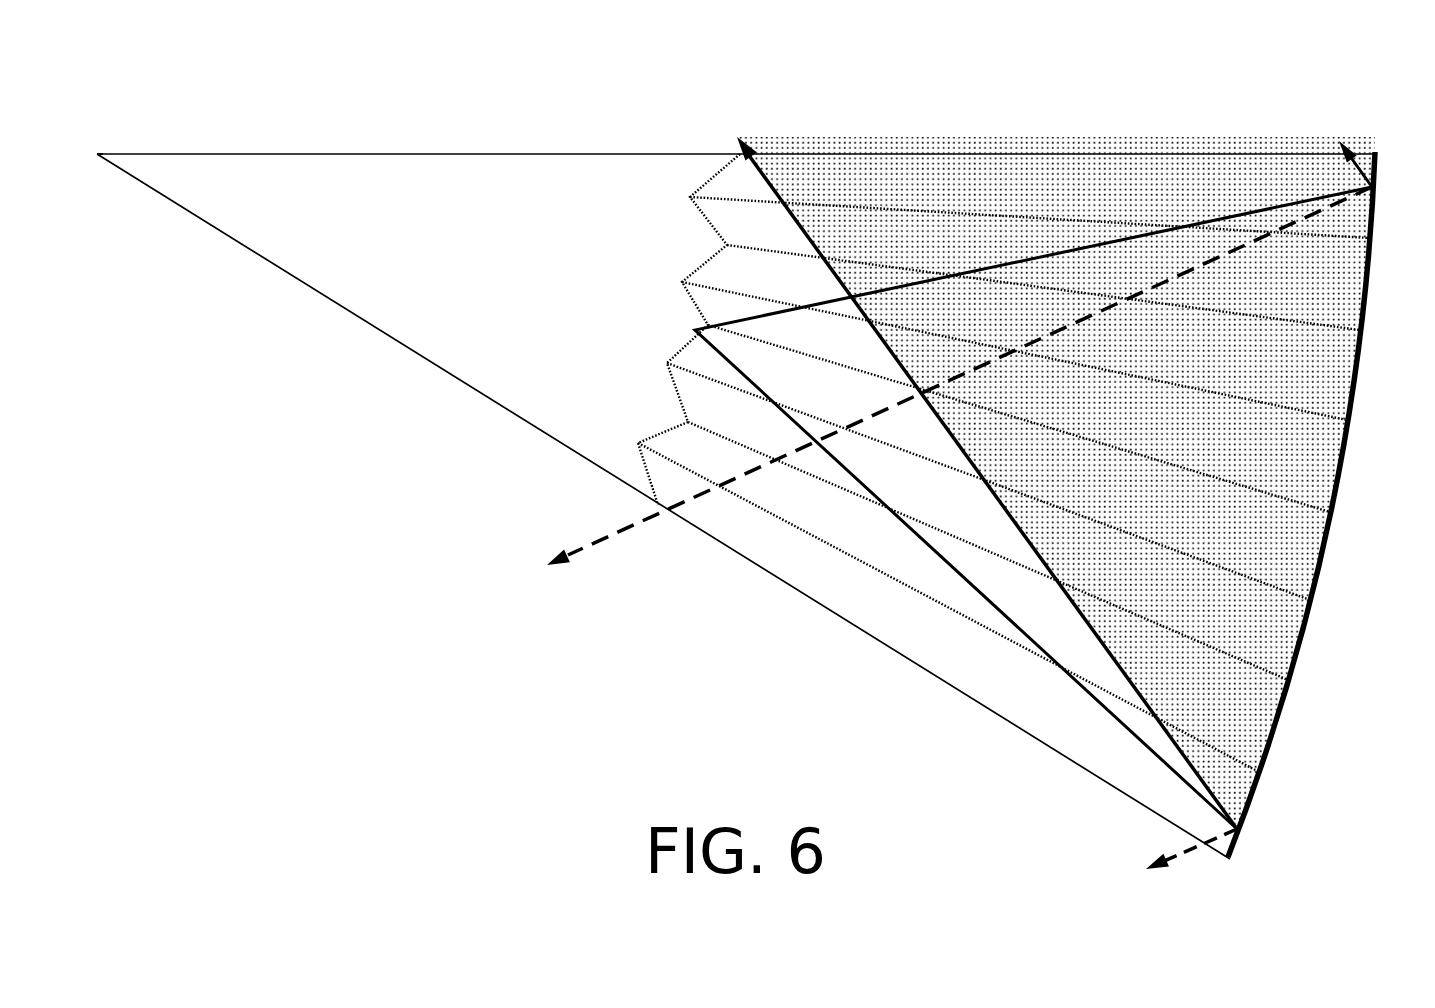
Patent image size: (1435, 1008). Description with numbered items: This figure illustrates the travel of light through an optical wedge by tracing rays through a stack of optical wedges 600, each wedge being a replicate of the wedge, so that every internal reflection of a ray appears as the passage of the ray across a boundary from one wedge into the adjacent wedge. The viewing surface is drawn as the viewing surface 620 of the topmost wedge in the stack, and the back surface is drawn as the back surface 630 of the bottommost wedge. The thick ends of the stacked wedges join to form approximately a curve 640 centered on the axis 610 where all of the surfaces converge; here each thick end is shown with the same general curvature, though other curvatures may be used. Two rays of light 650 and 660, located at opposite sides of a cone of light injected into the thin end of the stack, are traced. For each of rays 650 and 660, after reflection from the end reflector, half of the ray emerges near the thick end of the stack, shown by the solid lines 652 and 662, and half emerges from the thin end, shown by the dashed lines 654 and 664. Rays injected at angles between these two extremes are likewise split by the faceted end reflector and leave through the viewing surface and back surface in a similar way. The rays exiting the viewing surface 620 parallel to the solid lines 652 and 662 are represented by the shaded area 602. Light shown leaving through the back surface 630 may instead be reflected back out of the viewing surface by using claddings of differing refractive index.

The stack of optical wedges 600 is at (1043, 115).
The shaded area 602 is at (1112, 182).
The axis 610 is at (101, 148).
The viewing surface 620 is at (872, 153).
The back surface 630 is at (913, 664).
The curve 640 is at (1337, 488).
The ray of light 650 is at (748, 317).
The solid line 652 is at (1368, 180).
The dashed line 654 is at (692, 500).
The ray of light 660 is at (745, 377).
The solid line 662 is at (775, 186).
The dashed line 664 is at (1225, 830).